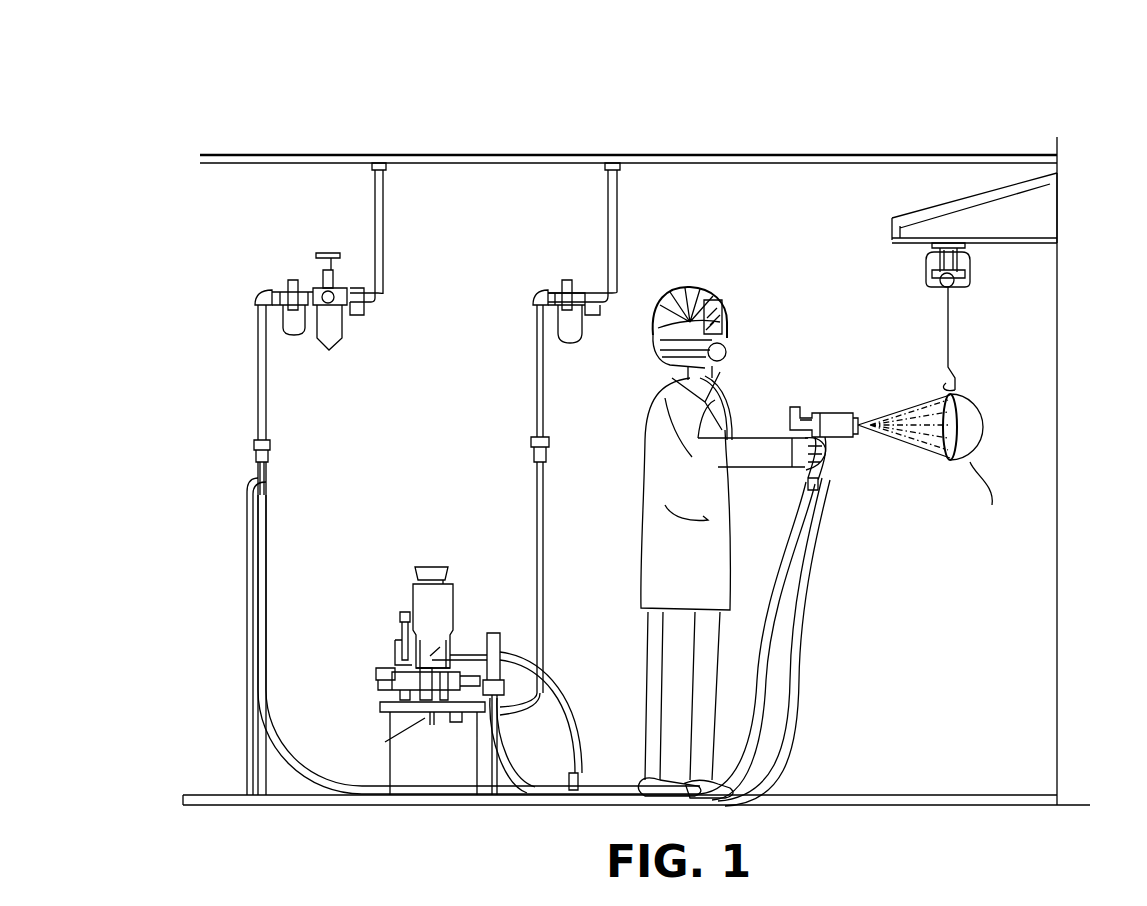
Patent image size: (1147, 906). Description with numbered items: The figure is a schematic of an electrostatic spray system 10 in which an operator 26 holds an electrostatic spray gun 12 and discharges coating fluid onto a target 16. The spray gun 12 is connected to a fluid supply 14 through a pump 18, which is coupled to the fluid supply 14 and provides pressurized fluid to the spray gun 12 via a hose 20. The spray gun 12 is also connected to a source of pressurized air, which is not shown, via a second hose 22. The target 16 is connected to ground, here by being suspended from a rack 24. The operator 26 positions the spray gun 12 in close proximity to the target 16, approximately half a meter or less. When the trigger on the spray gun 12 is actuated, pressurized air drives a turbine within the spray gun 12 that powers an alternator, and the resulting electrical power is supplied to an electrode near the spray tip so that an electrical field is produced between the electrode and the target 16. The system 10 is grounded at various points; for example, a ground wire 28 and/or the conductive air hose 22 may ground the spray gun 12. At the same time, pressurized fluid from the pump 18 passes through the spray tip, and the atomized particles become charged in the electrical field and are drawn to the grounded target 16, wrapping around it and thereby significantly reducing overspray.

The electrostatic spray system 10 is at (985, 128).
The electrostatic spray gun 12 is at (832, 410).
The fluid supply 14 is at (433, 765).
The target 16 is at (990, 425).
The pump 18 is at (430, 600).
The hose 20 is at (797, 618).
The hose 22 is at (275, 718).
The rack 24 is at (980, 272).
The operator 26 is at (727, 294).
The ground wire 28 is at (245, 635).